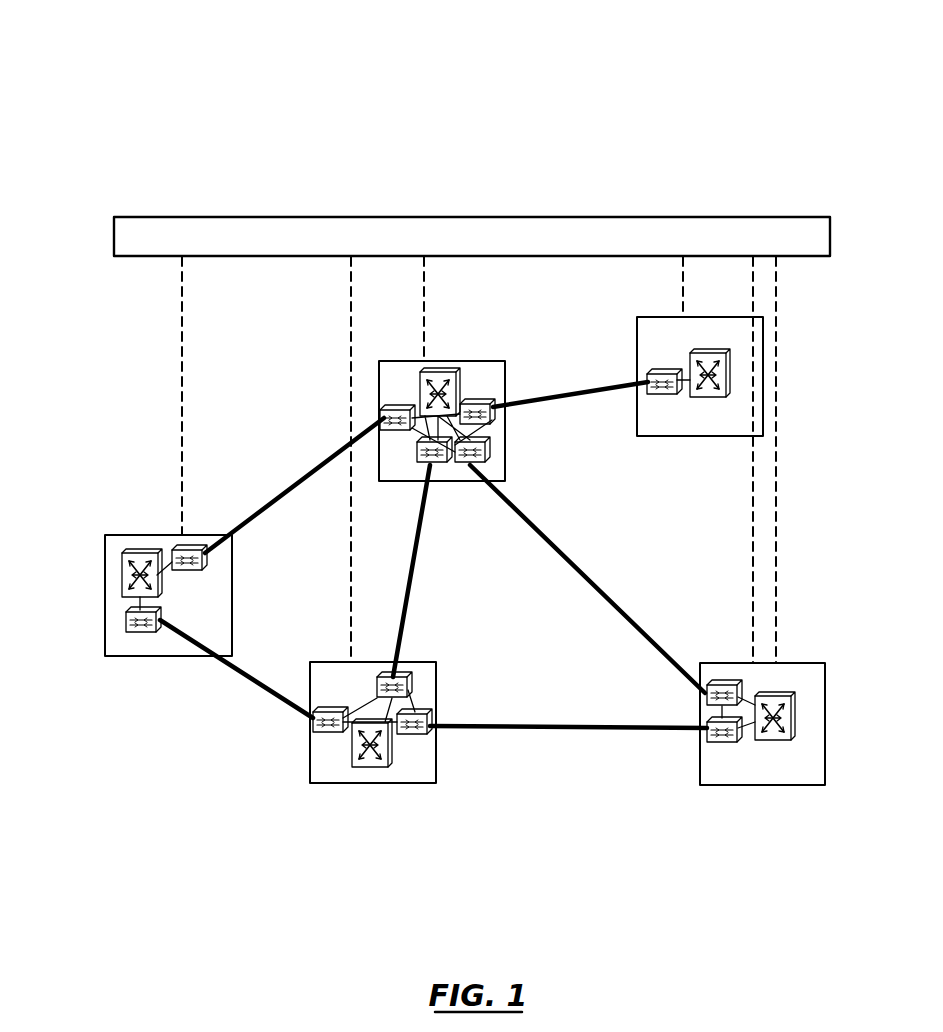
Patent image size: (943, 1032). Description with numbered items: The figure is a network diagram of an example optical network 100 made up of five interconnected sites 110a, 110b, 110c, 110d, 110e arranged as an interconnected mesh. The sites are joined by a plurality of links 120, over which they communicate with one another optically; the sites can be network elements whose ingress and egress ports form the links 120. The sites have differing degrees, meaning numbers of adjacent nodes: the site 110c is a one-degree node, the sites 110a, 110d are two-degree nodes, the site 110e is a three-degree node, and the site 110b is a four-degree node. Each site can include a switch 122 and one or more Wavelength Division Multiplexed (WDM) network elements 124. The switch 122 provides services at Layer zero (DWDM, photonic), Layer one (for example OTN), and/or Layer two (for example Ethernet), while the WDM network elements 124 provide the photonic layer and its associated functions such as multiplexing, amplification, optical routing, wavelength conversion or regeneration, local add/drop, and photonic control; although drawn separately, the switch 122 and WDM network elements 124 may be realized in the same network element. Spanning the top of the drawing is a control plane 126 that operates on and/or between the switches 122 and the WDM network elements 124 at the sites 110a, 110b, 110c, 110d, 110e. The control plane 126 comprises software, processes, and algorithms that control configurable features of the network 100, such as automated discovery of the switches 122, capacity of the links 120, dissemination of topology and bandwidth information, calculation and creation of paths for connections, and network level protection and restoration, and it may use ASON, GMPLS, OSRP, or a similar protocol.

The optical network 100 is at (538, 55).
The site 110a is at (105, 625).
The site 110b is at (475, 361).
The site 110c is at (713, 384).
The site 110d is at (740, 786).
The site 110e is at (310, 765).
The link 120 is at (290, 490).
The switch 122 is at (715, 352).
The Wavelength Division Multiplexed (WDM) network element 124 is at (667, 372).
The control plane 126 is at (605, 216).